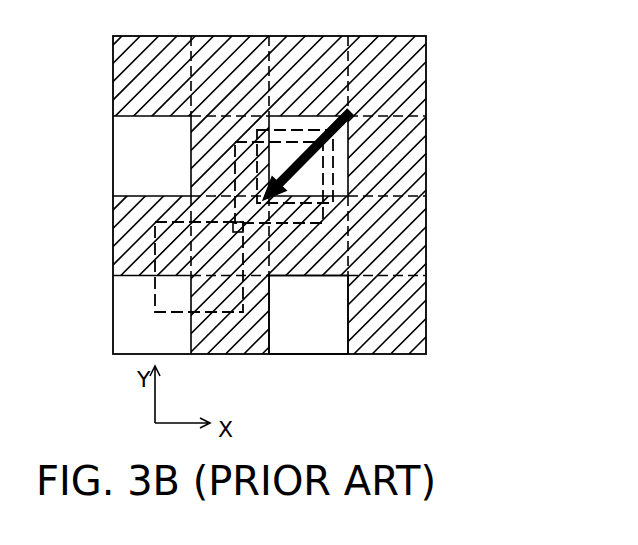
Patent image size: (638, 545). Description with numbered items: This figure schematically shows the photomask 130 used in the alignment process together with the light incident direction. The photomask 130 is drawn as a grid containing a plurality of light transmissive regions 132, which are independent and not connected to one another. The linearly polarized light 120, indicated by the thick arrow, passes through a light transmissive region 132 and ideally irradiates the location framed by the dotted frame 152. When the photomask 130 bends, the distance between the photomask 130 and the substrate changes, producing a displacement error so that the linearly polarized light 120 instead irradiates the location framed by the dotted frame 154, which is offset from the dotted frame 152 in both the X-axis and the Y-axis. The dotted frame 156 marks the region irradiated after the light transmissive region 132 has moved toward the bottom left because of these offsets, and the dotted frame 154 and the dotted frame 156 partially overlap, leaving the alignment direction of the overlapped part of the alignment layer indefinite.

The linearly polarized light 120 is at (360, 127).
The photomask 130 is at (393, 355).
The light transmissive region 132 is at (346, 328).
The dotted frame 152 is at (338, 172).
The dotted frame 154 is at (338, 220).
The dotted frame 156 is at (155, 238).